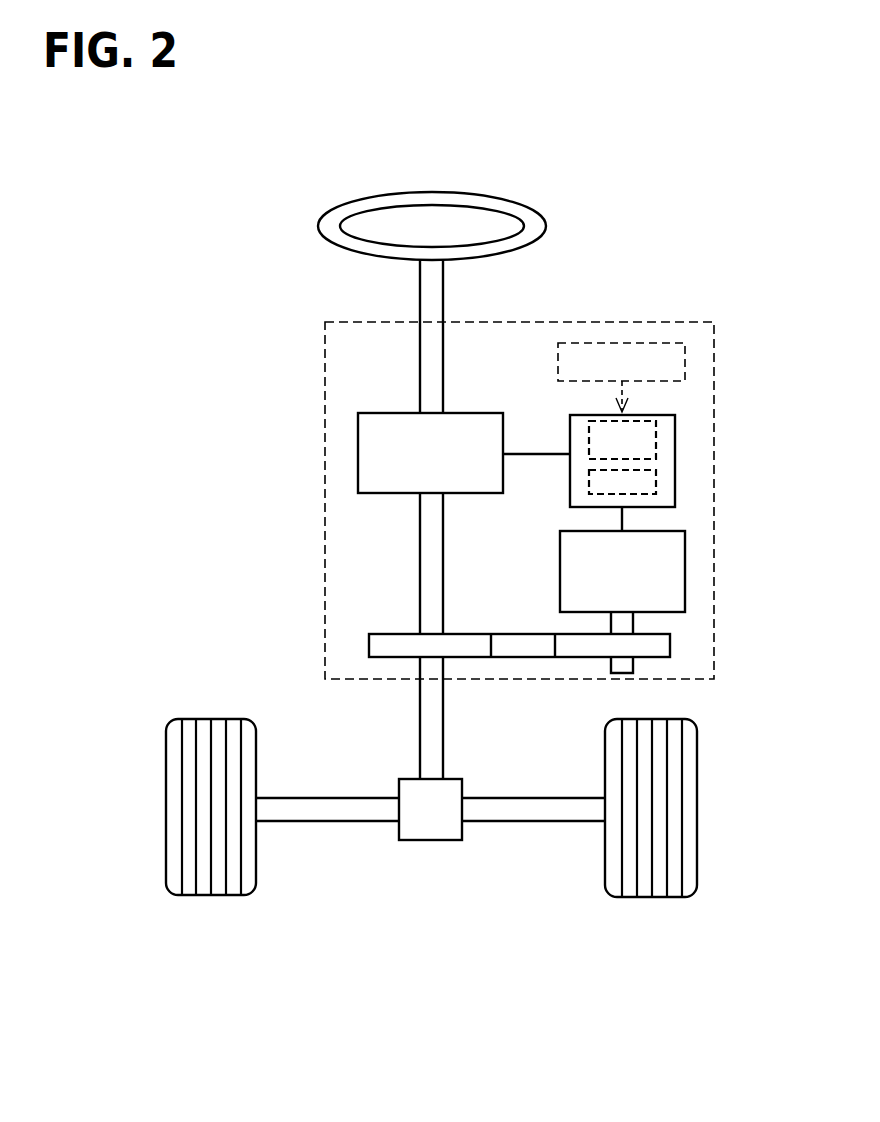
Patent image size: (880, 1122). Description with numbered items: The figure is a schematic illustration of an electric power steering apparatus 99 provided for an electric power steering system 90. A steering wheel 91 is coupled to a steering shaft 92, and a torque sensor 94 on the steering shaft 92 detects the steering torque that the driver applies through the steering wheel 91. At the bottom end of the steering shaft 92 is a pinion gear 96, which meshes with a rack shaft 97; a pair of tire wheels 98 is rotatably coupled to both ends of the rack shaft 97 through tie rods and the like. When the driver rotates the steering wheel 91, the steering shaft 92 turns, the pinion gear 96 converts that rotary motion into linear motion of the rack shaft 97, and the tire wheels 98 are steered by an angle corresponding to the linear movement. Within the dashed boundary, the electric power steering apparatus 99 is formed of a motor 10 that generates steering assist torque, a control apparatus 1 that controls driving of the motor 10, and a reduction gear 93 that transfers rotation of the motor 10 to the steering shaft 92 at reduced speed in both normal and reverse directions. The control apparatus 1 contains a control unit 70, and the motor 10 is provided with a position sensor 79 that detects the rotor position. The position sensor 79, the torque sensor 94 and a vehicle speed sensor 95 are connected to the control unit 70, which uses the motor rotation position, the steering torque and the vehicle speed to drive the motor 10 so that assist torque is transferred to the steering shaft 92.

The control apparatus 1 is at (675, 415).
The motor 10 is at (685, 560).
The control unit 70 is at (656, 440).
The position sensor 79 is at (656, 480).
The electric power steering system 90 is at (383, 942).
The steering wheel 91 is at (318, 226).
The steering shaft 92 is at (420, 293).
The reduction gear 93 is at (670, 642).
The torque sensor 94 is at (358, 464).
The vehicle speed sensor 95 is at (685, 362).
The pinion gear 96 is at (422, 840).
The rack shaft 97 is at (320, 822).
The tire wheels 98 is at (228, 895).
The electric power steering apparatus 99 is at (634, 322).